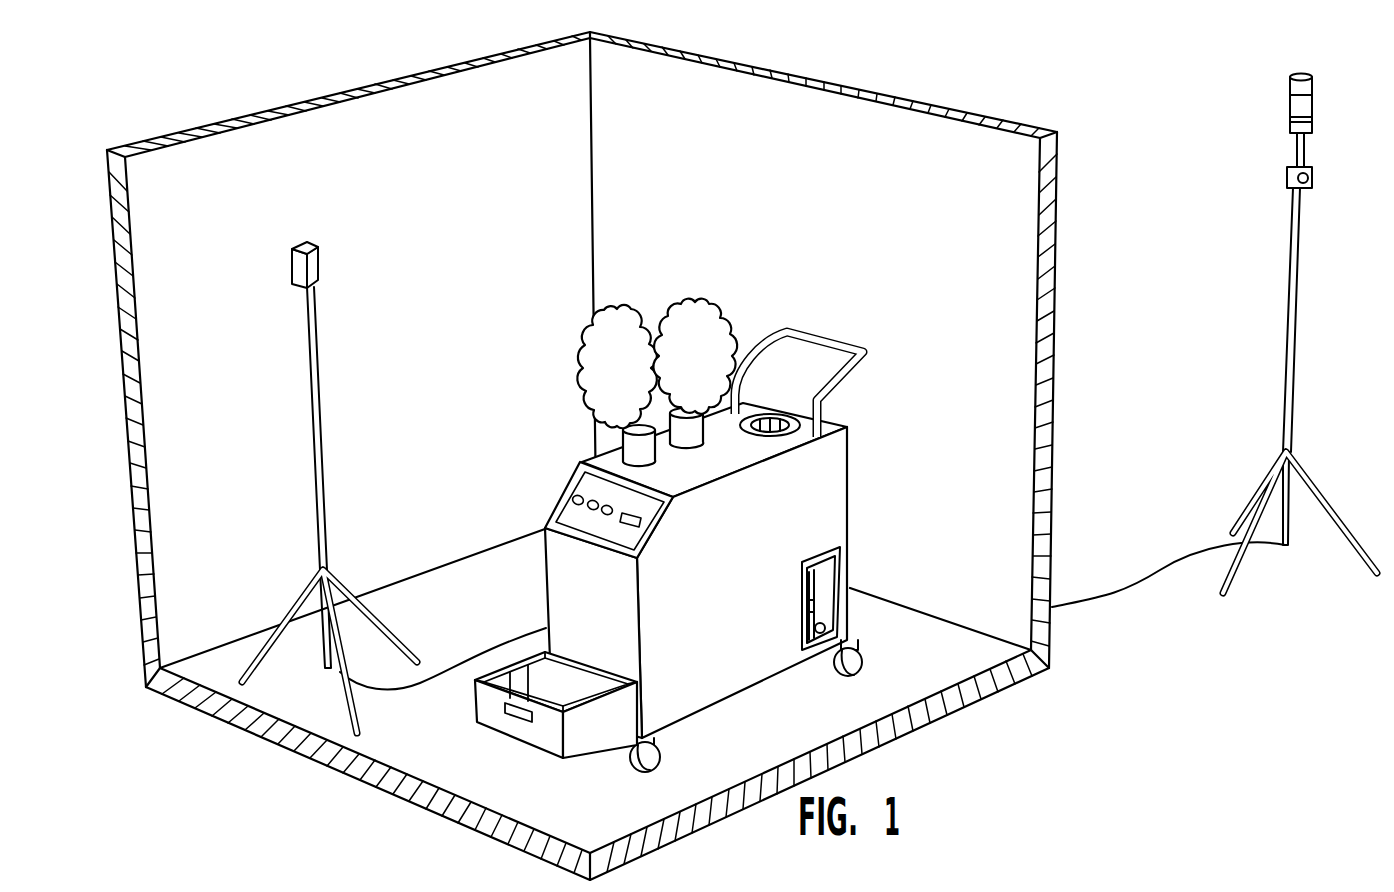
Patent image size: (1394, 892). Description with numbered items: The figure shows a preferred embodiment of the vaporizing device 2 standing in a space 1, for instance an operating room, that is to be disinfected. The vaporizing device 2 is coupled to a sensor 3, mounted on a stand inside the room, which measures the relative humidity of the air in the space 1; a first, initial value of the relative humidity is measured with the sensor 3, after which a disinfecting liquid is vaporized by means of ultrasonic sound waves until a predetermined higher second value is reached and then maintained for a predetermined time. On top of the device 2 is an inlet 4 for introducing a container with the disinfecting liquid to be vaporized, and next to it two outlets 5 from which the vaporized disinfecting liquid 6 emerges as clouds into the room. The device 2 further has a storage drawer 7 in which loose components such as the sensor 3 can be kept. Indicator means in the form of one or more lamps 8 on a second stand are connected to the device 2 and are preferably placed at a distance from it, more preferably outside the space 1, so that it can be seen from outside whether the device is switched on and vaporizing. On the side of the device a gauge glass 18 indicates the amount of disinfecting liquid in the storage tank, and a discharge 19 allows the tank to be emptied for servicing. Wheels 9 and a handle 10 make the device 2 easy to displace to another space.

The space 1 is at (834, 149).
The vaporizing device 2 is at (887, 433).
The sensor 3 is at (312, 262).
The inlet 4 is at (772, 430).
The outlets 5 is at (623, 443).
The vaporized disinfecting liquid 6 is at (693, 320).
The storage drawer 7 is at (547, 723).
The lamps 8 is at (1300, 105).
The wheels 9 is at (640, 772).
The handle 10 is at (823, 343).
The gauge glass 18 is at (802, 605).
The discharge 19 is at (825, 628).